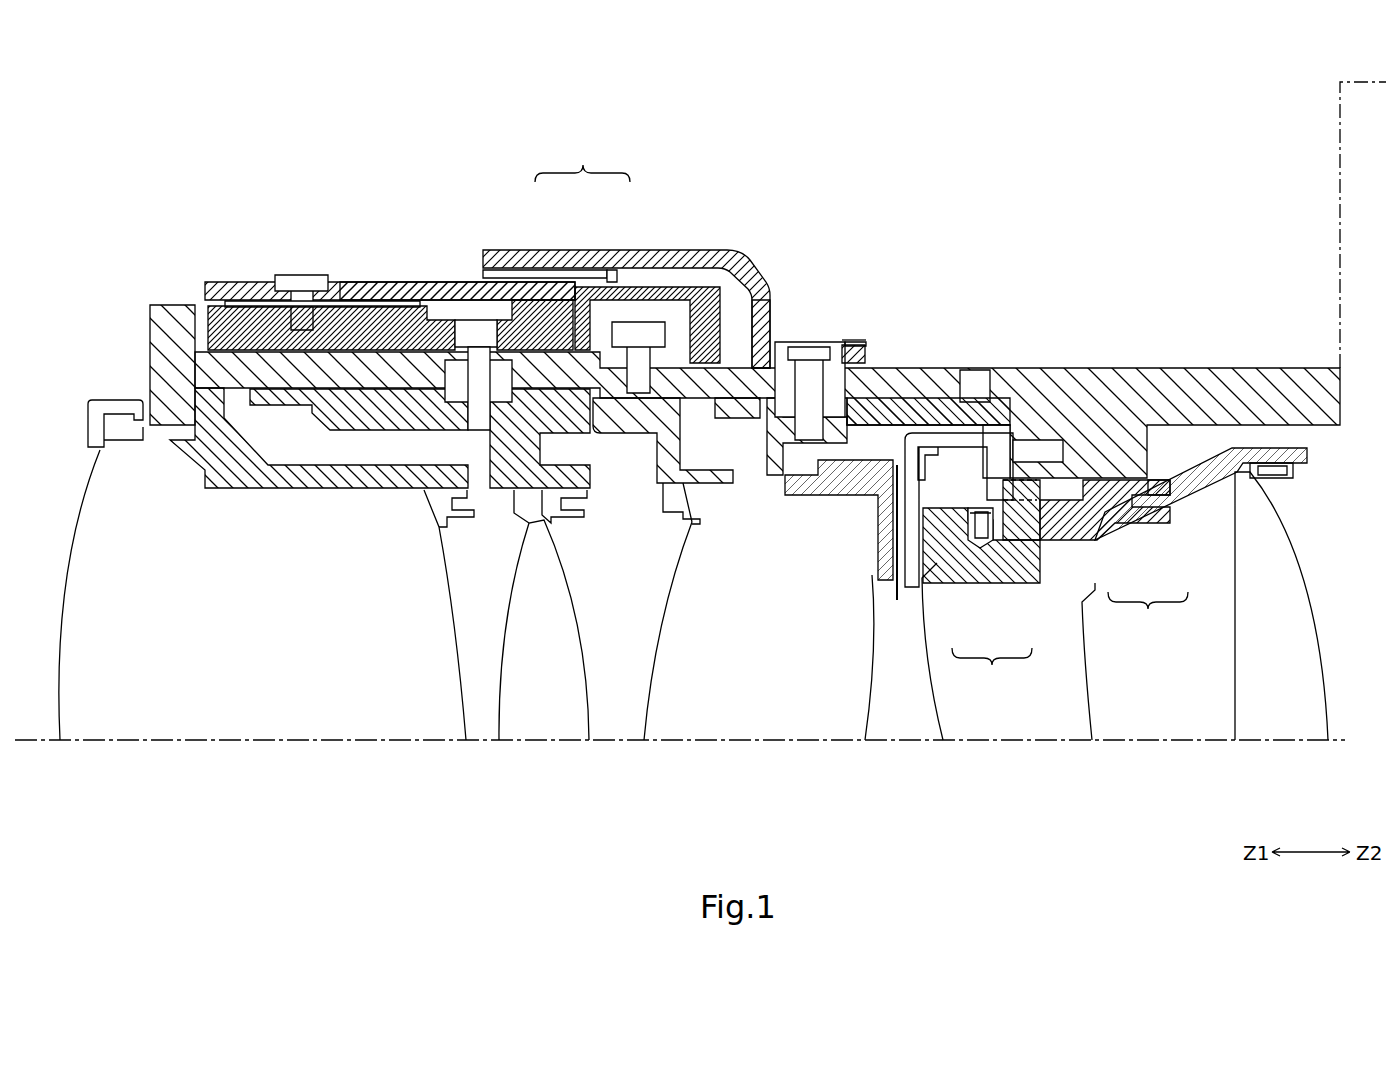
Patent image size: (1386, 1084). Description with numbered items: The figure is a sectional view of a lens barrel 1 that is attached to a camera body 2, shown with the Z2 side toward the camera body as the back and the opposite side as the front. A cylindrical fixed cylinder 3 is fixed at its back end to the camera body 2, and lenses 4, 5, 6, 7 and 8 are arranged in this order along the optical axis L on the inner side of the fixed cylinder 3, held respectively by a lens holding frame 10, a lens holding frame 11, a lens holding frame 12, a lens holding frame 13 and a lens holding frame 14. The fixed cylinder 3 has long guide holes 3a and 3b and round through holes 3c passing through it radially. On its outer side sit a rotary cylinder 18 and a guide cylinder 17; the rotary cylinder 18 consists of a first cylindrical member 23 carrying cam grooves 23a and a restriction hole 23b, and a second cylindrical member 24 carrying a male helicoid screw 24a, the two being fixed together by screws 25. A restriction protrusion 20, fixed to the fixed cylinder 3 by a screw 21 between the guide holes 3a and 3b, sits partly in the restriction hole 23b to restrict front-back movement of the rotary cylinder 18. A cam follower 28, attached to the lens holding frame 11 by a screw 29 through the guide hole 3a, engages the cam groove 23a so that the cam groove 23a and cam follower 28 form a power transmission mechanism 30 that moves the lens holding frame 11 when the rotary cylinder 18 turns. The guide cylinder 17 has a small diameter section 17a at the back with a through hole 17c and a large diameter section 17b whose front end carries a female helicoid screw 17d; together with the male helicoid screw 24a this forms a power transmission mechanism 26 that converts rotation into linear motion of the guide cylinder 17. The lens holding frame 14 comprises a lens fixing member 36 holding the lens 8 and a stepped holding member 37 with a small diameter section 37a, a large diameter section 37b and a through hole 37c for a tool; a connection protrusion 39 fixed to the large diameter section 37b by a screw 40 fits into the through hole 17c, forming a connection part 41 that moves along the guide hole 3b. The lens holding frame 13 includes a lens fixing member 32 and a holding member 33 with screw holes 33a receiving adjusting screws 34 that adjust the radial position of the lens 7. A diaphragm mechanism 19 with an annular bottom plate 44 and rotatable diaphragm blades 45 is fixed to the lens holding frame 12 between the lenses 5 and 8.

The lens barrel 1 is at (177, 303).
The camera body 2 is at (1340, 142).
The fixed cylinder 3 is at (1096, 367).
The guide hole 3a is at (437, 395).
The guide hole 3b is at (768, 422).
The through hole 3c is at (982, 380).
The lens 4 is at (455, 575).
The lens 5 is at (583, 628).
The lens 6 is at (673, 565).
The lens 7 is at (1090, 686).
The lens 8 is at (1233, 698).
The lens holding frame 10 is at (150, 345).
The lens holding frame 11 is at (316, 425).
The lens holding frame 12 is at (655, 470).
The lens holding frame 13 is at (992, 671).
The lens holding frame 14 is at (1148, 615).
The guide cylinder 17 is at (715, 248).
The small diameter section 17a is at (856, 344).
The large diameter section 17b is at (761, 334).
The through hole 17c is at (868, 352).
The female helicoid screw 17d is at (612, 272).
The rotary cylinder 18 is at (240, 280).
The diaphragm mechanism 19 is at (878, 578).
The restriction protrusion 20 is at (683, 320).
The screw 21 is at (640, 320).
The first cylindrical member 23 is at (385, 290).
The cam groove 23a is at (452, 340).
The restriction hole 23b is at (575, 390).
The second cylindrical member 24 is at (368, 281).
The male helicoid screw 24a is at (548, 268).
The screw 25 is at (298, 274).
The power transmission mechanism 26 is at (582, 160).
The cam follower 28 is at (410, 330).
The screw 29 is at (478, 455).
The power transmission mechanism 30 is at (467, 318).
The lens fixing member 32 is at (958, 586).
The holding member 33 is at (1020, 546).
The screw hole 33a is at (990, 525).
The adjusting screw 34 is at (978, 507).
The lens fixing member 36 is at (1150, 528).
The holding member 37 is at (1110, 518).
The small diameter section 37a is at (1162, 490).
The large diameter section 37b is at (728, 420).
The through hole 37c is at (950, 410).
The connection protrusion 39 is at (840, 345).
The screw 40 is at (808, 346).
The connection part 41 is at (848, 322).
The bottom plate 44 is at (959, 510).
The diaphragm blade 45 is at (895, 612).
The optical axis L is at (200, 742).